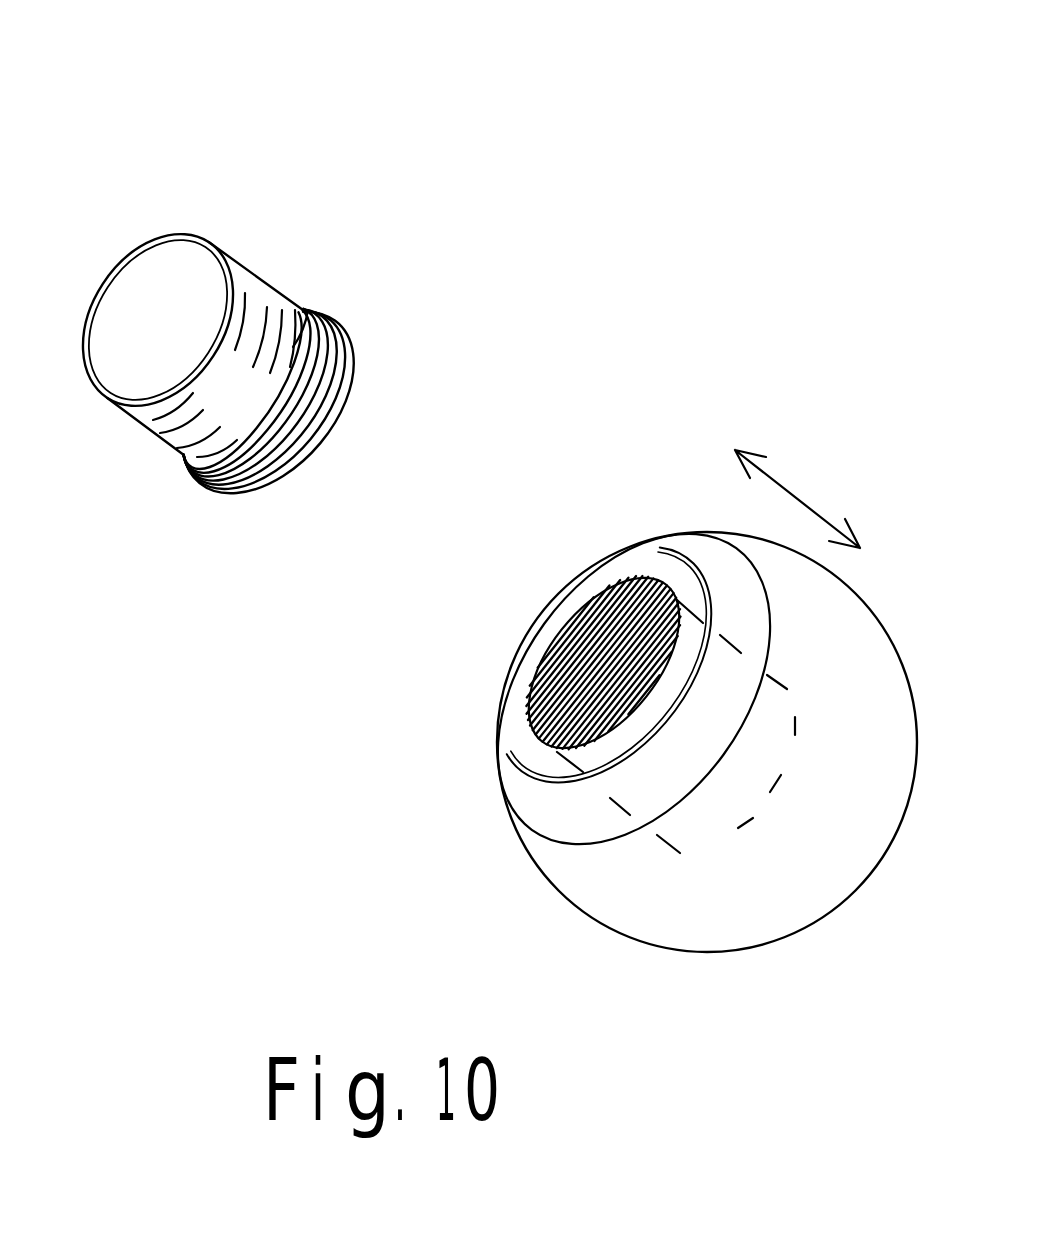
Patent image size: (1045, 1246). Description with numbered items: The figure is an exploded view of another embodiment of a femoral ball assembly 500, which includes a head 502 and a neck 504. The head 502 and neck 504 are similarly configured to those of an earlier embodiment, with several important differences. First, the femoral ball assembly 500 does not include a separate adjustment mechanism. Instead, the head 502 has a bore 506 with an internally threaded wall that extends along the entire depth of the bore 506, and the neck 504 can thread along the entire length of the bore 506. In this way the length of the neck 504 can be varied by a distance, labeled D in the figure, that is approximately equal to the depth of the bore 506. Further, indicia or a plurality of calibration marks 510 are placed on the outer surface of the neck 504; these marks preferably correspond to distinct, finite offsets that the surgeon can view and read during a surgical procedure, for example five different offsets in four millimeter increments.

The femoral ball assembly 500 is at (766, 147).
The head 502 is at (493, 905).
The neck 504 is at (299, 232).
The bore 506 is at (533, 713).
The calibration marks 510 is at (178, 440).